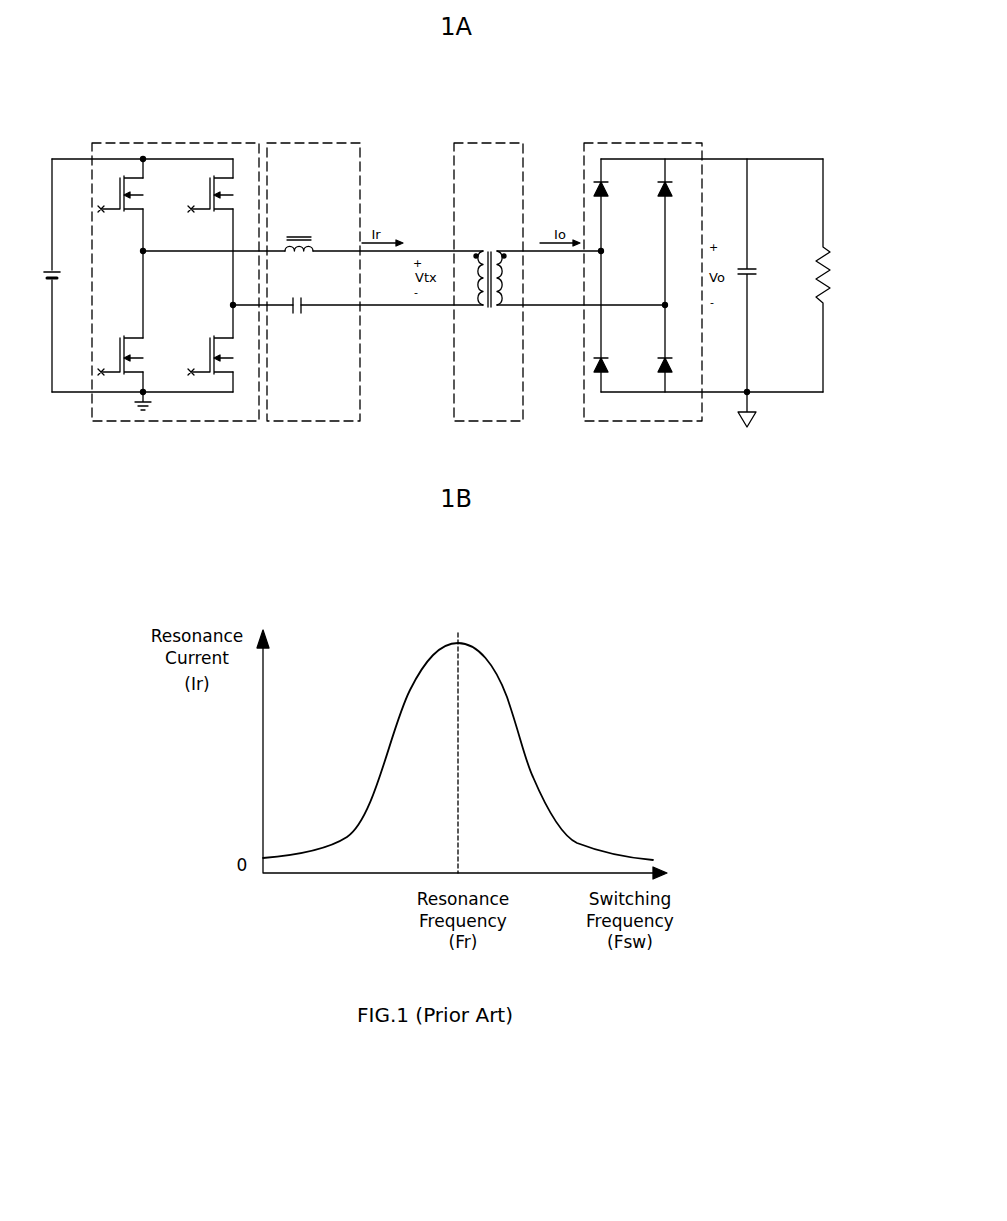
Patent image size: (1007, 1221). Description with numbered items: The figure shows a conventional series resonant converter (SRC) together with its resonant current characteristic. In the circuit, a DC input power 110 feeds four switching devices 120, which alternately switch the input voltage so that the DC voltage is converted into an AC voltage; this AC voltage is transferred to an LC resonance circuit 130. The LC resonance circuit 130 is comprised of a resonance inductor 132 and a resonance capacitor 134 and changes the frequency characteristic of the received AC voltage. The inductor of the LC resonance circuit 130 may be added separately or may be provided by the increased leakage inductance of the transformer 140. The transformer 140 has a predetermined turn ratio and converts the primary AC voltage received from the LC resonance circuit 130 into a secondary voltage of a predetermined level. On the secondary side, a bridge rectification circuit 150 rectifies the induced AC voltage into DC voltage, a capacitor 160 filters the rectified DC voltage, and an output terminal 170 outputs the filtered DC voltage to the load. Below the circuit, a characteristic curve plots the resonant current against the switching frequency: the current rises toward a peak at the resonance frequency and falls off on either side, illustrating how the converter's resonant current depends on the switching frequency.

The DC input power 110 is at (50, 268).
The four switching devices 120 is at (196, 143).
The LC resonance circuit 130 is at (313, 260).
The resonance inductor 132 is at (306, 234).
The resonance capacitor 134 is at (304, 296).
The transformer 140 is at (473, 143).
The bridge rectification circuit 150 is at (603, 143).
The capacitor 160 is at (750, 264).
The output terminal 170 is at (826, 243).